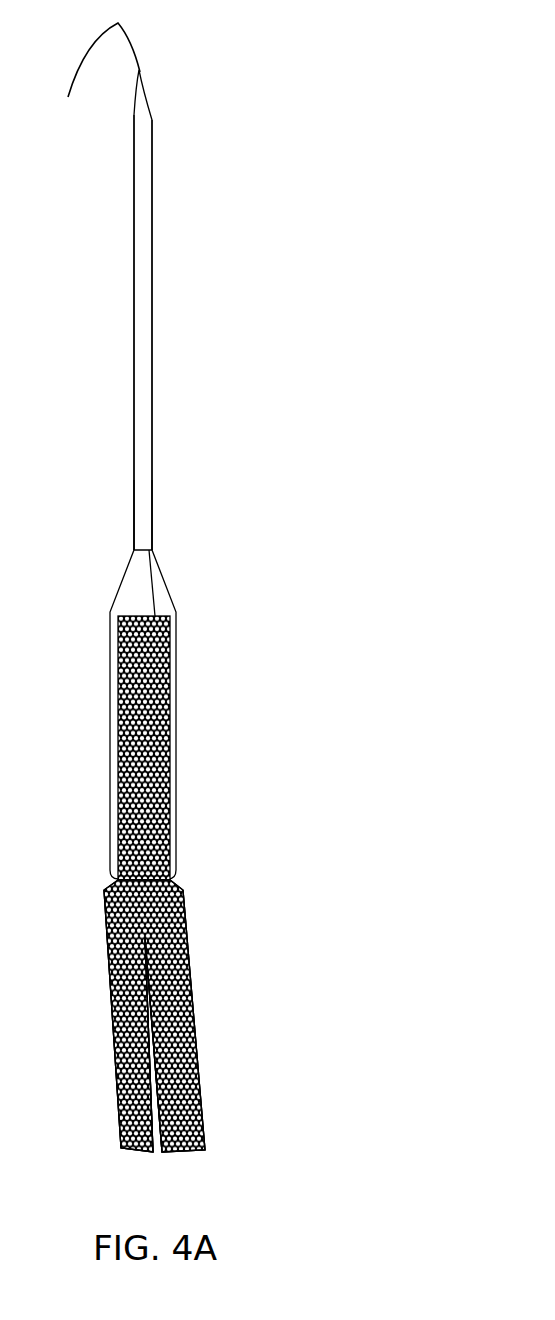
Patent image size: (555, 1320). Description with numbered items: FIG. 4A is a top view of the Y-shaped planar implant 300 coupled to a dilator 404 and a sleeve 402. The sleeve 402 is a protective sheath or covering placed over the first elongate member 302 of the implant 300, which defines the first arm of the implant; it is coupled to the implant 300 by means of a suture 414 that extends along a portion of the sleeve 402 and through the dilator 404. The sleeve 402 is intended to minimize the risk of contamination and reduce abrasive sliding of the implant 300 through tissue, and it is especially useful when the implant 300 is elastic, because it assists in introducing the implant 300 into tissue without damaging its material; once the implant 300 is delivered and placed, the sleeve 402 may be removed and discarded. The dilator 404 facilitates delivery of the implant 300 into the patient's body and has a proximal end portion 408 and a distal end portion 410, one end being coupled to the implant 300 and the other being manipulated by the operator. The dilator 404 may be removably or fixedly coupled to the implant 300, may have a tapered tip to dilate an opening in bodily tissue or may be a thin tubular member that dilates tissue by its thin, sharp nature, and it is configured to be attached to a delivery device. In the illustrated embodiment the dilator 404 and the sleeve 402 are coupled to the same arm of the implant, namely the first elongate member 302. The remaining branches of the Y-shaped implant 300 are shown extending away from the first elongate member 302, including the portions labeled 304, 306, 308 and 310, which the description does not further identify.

The suture 414 is at (135, 43).
The proximal end portion 408 is at (152, 216).
The dilator 404 is at (152, 398).
The distal end portion 410 is at (152, 535).
The sleeve 402 is at (155, 585).
The first elongate member 302 is at (168, 755).
The Y-shaped planar implant 300 is at (213, 928).
The slit 310 is at (143, 980).
The lower mesh body 304 is at (193, 1027).
The left leg 308 is at (112, 1075).
The right leg 306 is at (203, 1118).